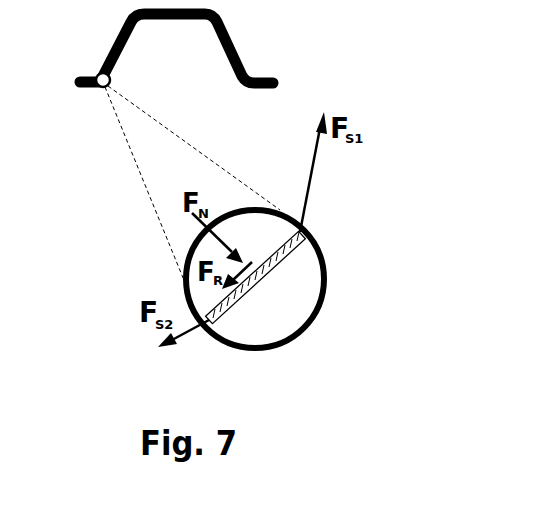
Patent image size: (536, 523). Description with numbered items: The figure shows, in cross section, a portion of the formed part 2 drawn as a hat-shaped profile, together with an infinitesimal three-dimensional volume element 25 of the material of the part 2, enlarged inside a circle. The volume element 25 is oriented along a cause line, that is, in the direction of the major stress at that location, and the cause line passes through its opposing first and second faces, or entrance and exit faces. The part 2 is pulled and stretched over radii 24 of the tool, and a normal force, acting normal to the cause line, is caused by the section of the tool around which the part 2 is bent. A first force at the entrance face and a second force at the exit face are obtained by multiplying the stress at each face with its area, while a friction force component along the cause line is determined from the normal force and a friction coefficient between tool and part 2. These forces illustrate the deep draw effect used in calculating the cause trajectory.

The part 2 is at (223, 33).
The radii 24 is at (98, 74).
The volume element 25 is at (250, 283).